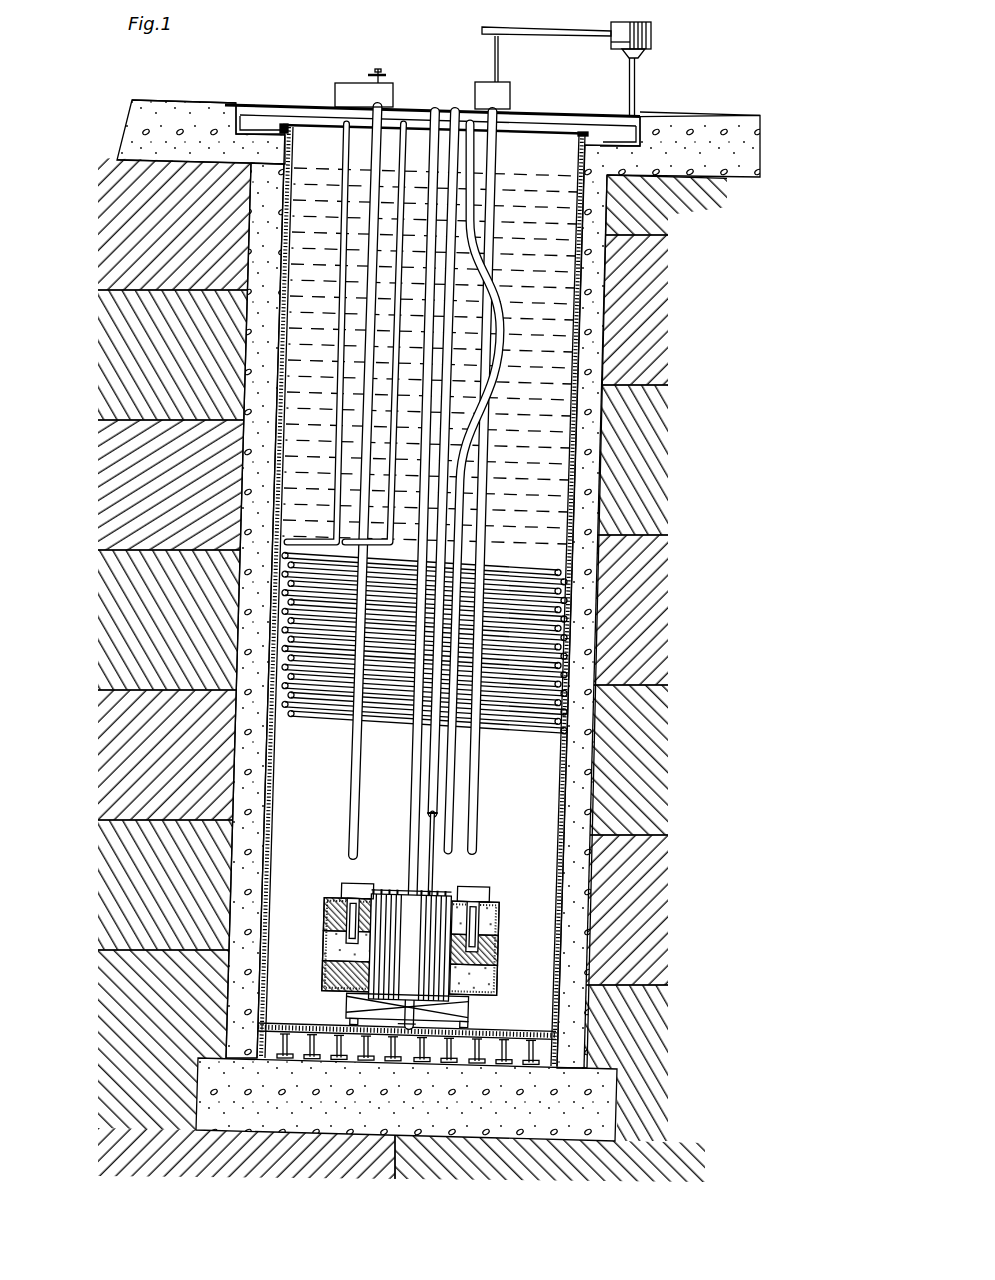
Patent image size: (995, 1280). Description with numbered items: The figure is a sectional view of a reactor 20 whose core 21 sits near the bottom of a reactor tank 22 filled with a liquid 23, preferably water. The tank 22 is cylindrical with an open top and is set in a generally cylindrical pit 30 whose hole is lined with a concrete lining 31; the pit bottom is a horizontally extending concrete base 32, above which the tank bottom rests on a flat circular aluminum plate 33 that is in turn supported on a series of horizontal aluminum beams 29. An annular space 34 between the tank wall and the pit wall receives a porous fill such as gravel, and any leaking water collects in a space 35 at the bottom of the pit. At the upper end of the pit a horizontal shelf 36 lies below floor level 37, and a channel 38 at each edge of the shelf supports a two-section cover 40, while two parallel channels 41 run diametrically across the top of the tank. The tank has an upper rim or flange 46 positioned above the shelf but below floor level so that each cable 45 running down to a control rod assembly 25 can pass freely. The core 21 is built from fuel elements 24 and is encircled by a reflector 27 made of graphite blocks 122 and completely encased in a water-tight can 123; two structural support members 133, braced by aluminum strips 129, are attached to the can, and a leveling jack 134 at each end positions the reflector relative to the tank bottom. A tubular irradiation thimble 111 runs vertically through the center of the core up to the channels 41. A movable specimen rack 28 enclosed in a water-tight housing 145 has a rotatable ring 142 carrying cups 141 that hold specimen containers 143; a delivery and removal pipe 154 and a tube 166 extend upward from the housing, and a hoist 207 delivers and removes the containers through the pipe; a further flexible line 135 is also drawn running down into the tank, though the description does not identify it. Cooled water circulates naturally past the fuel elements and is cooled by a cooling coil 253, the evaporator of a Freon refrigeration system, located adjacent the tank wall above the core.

The hoist 207 is at (660, 34).
The channels 41 is at (300, 110).
The channel 38 is at (228, 120).
The horizontal shelf 36 is at (264, 130).
The cover 40 is at (583, 96).
The floor level 37 is at (646, 118).
The rim or flange 46 is at (583, 131).
The tube 166 is at (365, 362).
The flexible cable 135 is at (501, 383).
The liquid 23 is at (580, 372).
The reactor tank 22 is at (586, 406).
The lining 31 is at (600, 452).
The delivery and removal pipe 154 is at (485, 452).
The cable 45 is at (447, 517).
The pit 30 is at (605, 568).
The cooling coil 253 is at (262, 620).
The reactor 20 is at (323, 764).
The tubular irradiation thimble 111 is at (412, 760).
The annular space 34 is at (565, 765).
The control rod assemblies 25 is at (424, 817).
The water-tight housing 145 is at (345, 896).
The fuel elements 24 is at (389, 896).
The rotatable ring 142 is at (470, 893).
The movable specimen rack 28 is at (480, 899).
The reflector 27 is at (332, 925).
The graphite blocks 122 is at (345, 960).
The core 21 is at (380, 962).
The specimen containers 143 is at (478, 945).
The cups 141 is at (482, 952).
The water-tight can 123 is at (484, 990).
The structural support members 133 is at (350, 1005).
The leveling jack 134 is at (352, 1022).
The aluminum strips 129 is at (424, 1021).
The plate 33 is at (244, 1042).
The space 35 is at (545, 1052).
The horizontal aluminum beams 29 is at (405, 1048).
The concrete base 32 is at (600, 1112).